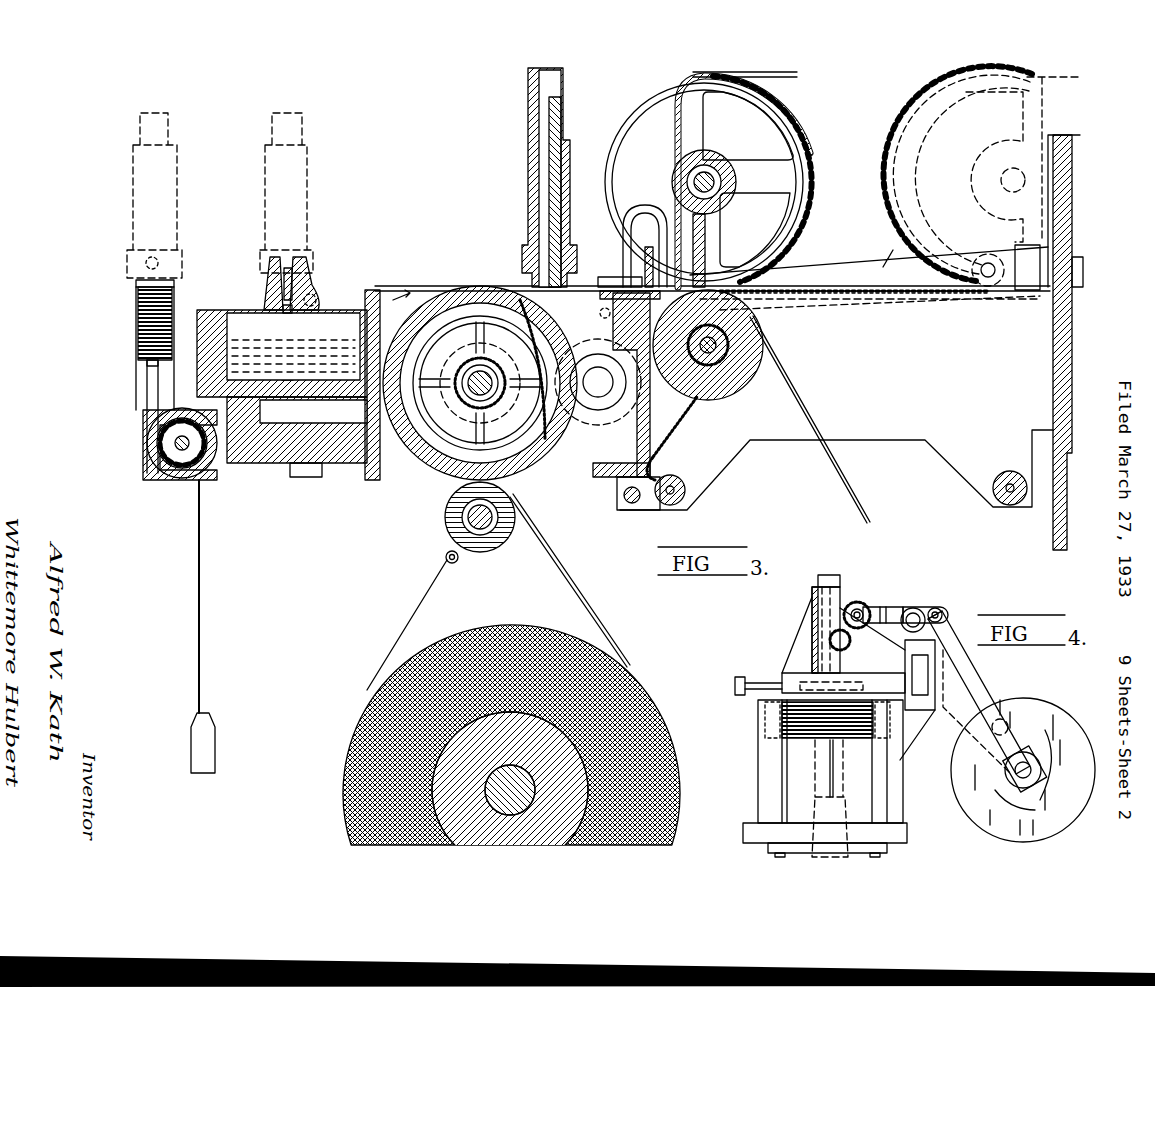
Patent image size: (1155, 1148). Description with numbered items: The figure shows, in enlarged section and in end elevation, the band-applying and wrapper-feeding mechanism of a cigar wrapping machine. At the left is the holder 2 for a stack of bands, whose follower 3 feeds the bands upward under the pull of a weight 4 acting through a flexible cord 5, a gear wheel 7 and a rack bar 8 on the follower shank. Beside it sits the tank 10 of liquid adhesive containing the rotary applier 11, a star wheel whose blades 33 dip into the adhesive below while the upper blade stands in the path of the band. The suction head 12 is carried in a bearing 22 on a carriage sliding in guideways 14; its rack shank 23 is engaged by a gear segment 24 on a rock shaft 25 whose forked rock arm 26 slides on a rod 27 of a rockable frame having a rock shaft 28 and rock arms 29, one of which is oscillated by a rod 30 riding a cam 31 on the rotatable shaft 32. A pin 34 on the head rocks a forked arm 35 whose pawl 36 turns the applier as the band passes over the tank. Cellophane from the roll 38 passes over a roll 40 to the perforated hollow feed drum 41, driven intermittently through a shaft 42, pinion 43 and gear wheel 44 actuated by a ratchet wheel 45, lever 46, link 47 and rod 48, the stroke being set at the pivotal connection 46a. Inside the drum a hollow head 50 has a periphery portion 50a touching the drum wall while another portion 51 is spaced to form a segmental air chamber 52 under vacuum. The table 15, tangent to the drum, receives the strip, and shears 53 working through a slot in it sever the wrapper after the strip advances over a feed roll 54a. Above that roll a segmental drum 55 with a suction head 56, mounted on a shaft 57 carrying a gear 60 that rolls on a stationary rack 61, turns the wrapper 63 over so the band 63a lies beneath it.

In FIG. 3, the holder 2 is at (140, 368).
In FIG. 4, the holder 2 is at (758, 770).
In FIG. 3, the follower 3 is at (152, 380).
In FIG. 3, the weight 4 is at (217, 740).
In FIG. 3, the flexible cord 5 is at (203, 606).
In FIG. 3, the gear wheel 7 is at (208, 460).
In FIG. 3, the rack bar 8 is at (155, 425).
In FIG. 3, the tank 10 is at (236, 312).
In FIG. 3, the rotary adhesive applier 11 is at (316, 302).
In FIG. 3, the suction head 12 is at (265, 213).
In FIG. 4, the suction head 12 is at (804, 631).
In FIG. 4, the guideways 14 is at (954, 740).
In FIG. 3, the table 15 is at (588, 280).
In FIG. 3, the bearing 22 is at (566, 160).
In FIG. 4, the bearing 22 is at (812, 598).
In FIG. 4, the rack shank 23 is at (848, 644).
In FIG. 4, the gear segment 24 is at (858, 602).
In FIG. 4, the rock shaft 25 is at (862, 606).
In FIG. 4, the forked rock arm 26 is at (885, 606).
In FIG. 4, the rod 27 is at (918, 608).
In FIG. 4, the rock shaft 28 is at (945, 615).
In FIG. 4, the rock arms 29 is at (940, 612).
In FIG. 4, the rod 30 is at (972, 663).
In FIG. 4, the cam 31 is at (1030, 740).
In FIG. 4, the rotatable shaft 32 is at (1018, 772).
In FIG. 3, the blades 33 is at (300, 290).
In FIG. 3, the pin 34 is at (160, 262).
In FIG. 4, the pin 34 is at (740, 677).
In FIG. 3, the forked arm 35 is at (300, 272).
In FIG. 3, the pawl 36 is at (315, 292).
In FIG. 3, the roll 38 is at (650, 708).
In FIG. 3, the roll 40 is at (488, 548).
In FIG. 3, the perforated hollow feed drum 41 is at (437, 462).
In FIG. 3, the shaft 42 is at (410, 447).
In FIG. 3, the pinion 43 is at (460, 292).
In FIG. 3, the gear wheel 44 is at (690, 433).
In FIG. 3, the ratchet wheel 45 is at (600, 412).
In FIG. 3, the lever 46 is at (636, 215).
In FIG. 3, the pivotal connection 46a is at (603, 316).
In FIG. 3, the link 47 is at (869, 249).
In FIG. 3, the rod 48 is at (1040, 292).
In FIG. 3, the hollow head 50 is at (428, 292).
In FIG. 3, the periphery portion 50a is at (505, 352).
In FIG. 3, the spaced portion 51 is at (444, 290).
In FIG. 3, the segmental air chamber 52 is at (386, 318).
In FIG. 3, the shears 53 is at (645, 252).
In FIG. 3, the feed roll 54a is at (760, 326).
In FIG. 3, the segmental drum 55 is at (810, 168).
In FIG. 3, the suction head 56 is at (780, 248).
In FIG. 3, the shaft 57 is at (680, 160).
In FIG. 3, the gear 60 is at (800, 130).
In FIG. 3, the stationary rack 61 is at (832, 290).
In FIG. 3, the wrapper 63 is at (792, 383).
In FIG. 3, the band 63a is at (162, 310).
In FIG. 4, the band 63a is at (760, 728).